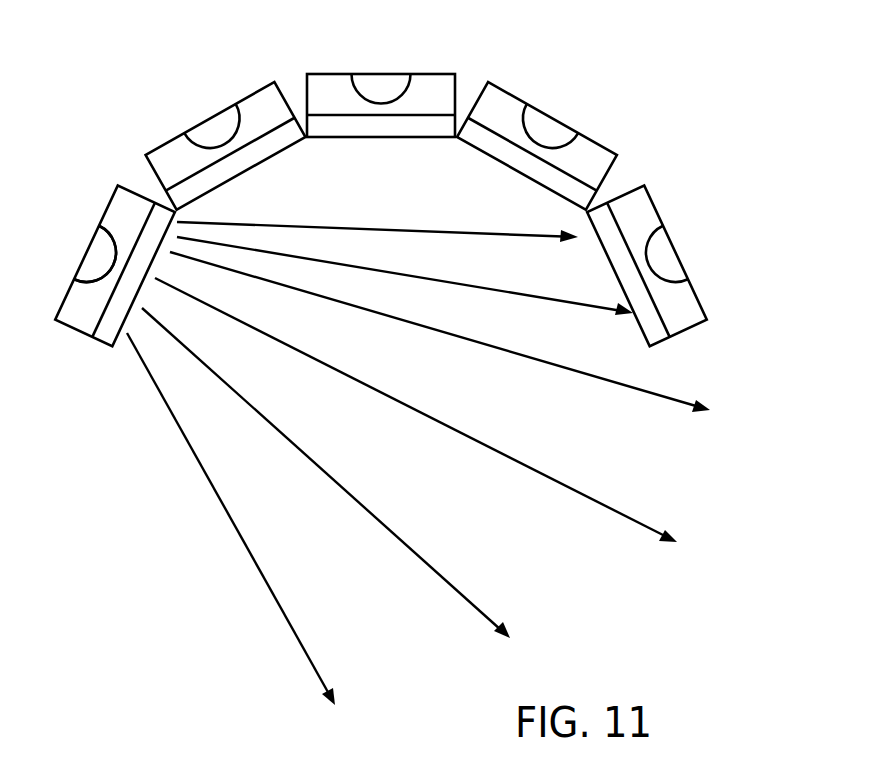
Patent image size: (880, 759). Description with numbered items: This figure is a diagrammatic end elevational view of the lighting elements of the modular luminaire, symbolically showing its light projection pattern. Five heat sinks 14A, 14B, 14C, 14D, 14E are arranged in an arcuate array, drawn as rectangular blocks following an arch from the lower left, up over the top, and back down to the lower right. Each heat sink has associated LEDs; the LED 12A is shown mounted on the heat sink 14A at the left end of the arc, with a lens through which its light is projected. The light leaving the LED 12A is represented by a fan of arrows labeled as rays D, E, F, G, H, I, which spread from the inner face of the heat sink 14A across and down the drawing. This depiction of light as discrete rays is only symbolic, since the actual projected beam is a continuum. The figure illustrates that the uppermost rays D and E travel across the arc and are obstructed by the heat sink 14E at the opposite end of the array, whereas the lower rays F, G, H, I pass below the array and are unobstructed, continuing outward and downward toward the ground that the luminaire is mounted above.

The heat sink 14A is at (98, 204).
The heat sink 14B is at (229, 78).
The heat sink 14C is at (400, 64).
The heat sink 14D is at (558, 90).
The heat sink 14E is at (685, 221).
The LED 12A is at (88, 285).
The ray D is at (427, 231).
The ray E is at (542, 303).
The ray F is at (590, 375).
The ray G is at (563, 484).
The ray H is at (420, 557).
The ray I is at (285, 618).